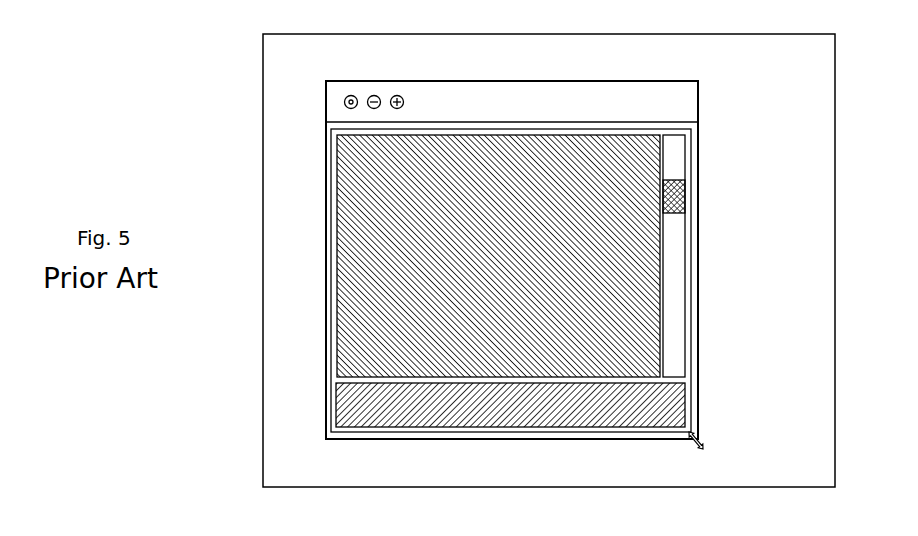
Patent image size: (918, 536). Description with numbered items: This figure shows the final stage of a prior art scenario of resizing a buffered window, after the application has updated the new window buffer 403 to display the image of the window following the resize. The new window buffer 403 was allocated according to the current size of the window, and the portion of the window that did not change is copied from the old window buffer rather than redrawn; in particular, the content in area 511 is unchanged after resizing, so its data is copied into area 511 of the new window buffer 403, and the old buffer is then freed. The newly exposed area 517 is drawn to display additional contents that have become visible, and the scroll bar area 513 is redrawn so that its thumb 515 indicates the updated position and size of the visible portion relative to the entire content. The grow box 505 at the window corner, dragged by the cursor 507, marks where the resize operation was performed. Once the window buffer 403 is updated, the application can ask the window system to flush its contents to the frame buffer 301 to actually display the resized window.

The frame buffer 301 is at (788, 34).
The new window buffer 403 is at (677, 81).
The window border 505 is at (693, 430).
The resize cursor 507 is at (691, 447).
The area 511 is at (605, 135).
The scroll bar area 513 is at (685, 325).
The scroll bar thumb 515 is at (676, 212).
The area 517 is at (333, 406).